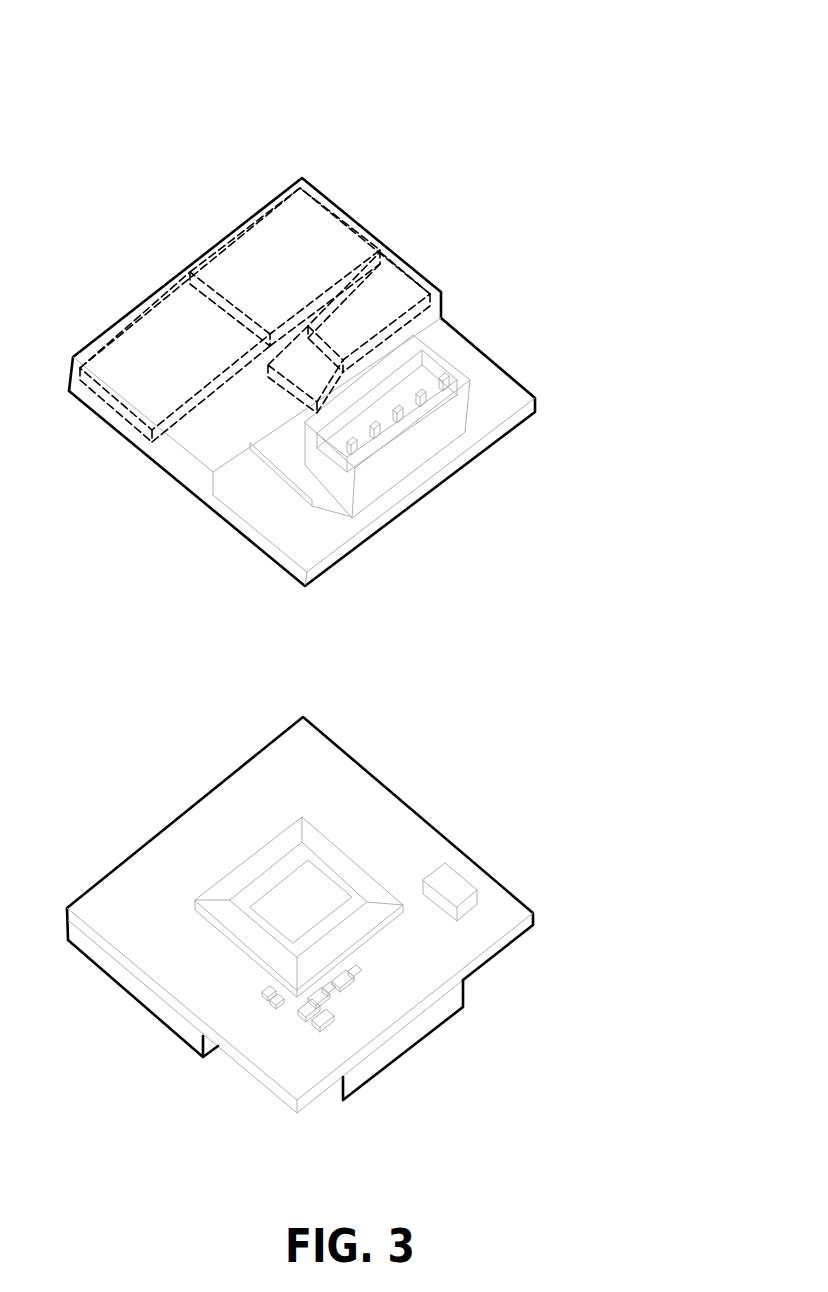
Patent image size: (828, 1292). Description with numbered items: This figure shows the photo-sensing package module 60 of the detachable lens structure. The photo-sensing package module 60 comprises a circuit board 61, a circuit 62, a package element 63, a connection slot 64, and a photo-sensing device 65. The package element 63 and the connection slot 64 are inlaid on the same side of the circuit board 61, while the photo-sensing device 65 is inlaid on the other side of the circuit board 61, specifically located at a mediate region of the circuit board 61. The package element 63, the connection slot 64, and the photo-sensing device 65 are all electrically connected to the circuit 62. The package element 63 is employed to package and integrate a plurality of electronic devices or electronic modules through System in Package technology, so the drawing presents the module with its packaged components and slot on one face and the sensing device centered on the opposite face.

The photo-sensing package module 60 is at (628, 78).
The circuit board 61 is at (405, 509).
The circuit 62 is at (288, 482).
The package element 63 is at (176, 280).
The connection slot 64 is at (465, 378).
The photo-sensing device 65 is at (233, 872).